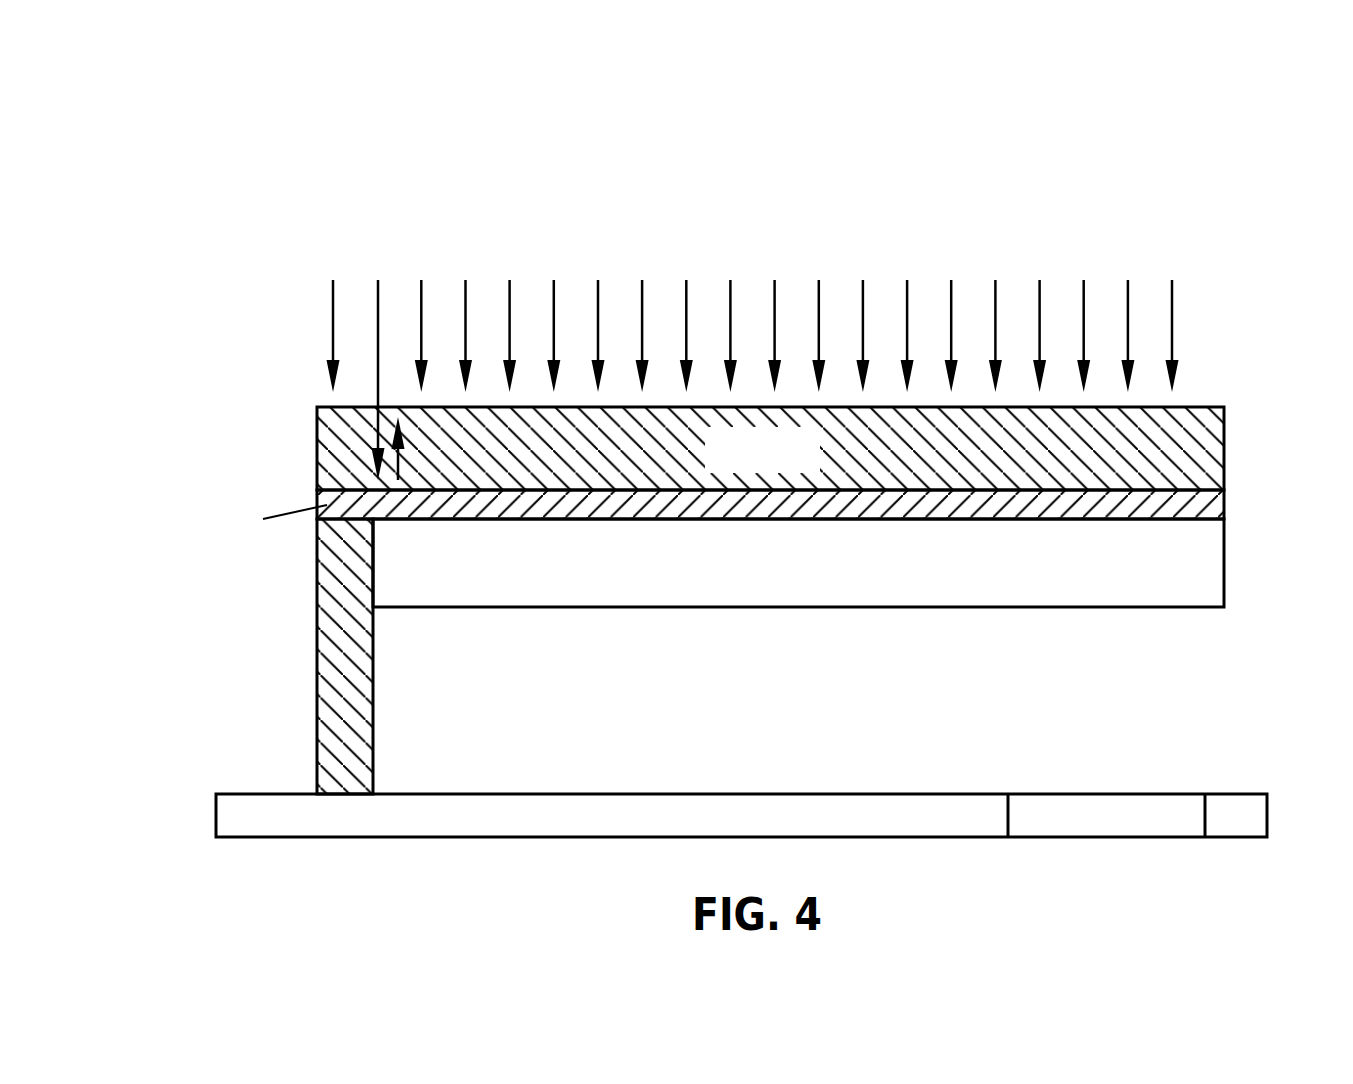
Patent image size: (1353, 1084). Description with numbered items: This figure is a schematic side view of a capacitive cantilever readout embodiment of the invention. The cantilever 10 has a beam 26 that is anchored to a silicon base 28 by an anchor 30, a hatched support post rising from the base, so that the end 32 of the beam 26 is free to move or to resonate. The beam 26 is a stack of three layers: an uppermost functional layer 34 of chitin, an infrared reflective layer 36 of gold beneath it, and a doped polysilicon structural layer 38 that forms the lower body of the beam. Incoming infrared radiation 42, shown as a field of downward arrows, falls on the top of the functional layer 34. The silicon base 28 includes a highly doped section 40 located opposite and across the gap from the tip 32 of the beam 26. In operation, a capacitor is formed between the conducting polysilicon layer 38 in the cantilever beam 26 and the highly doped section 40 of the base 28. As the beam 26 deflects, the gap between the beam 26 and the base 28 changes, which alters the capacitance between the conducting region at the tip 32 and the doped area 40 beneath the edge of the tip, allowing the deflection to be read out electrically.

The cantilever 10 is at (158, 152).
The beam 26 is at (296, 452).
The silicon base 28 is at (216, 818).
The anchor 30 is at (317, 637).
The end of the beam 32 is at (1172, 607).
The functional layer 34 is at (1225, 458).
The infrared reflective layer 36 is at (1225, 500).
The doped polysilicon structural layer 38 is at (1225, 550).
The highly doped section 40 is at (1161, 822).
The infrared radiation 42 is at (1172, 305).